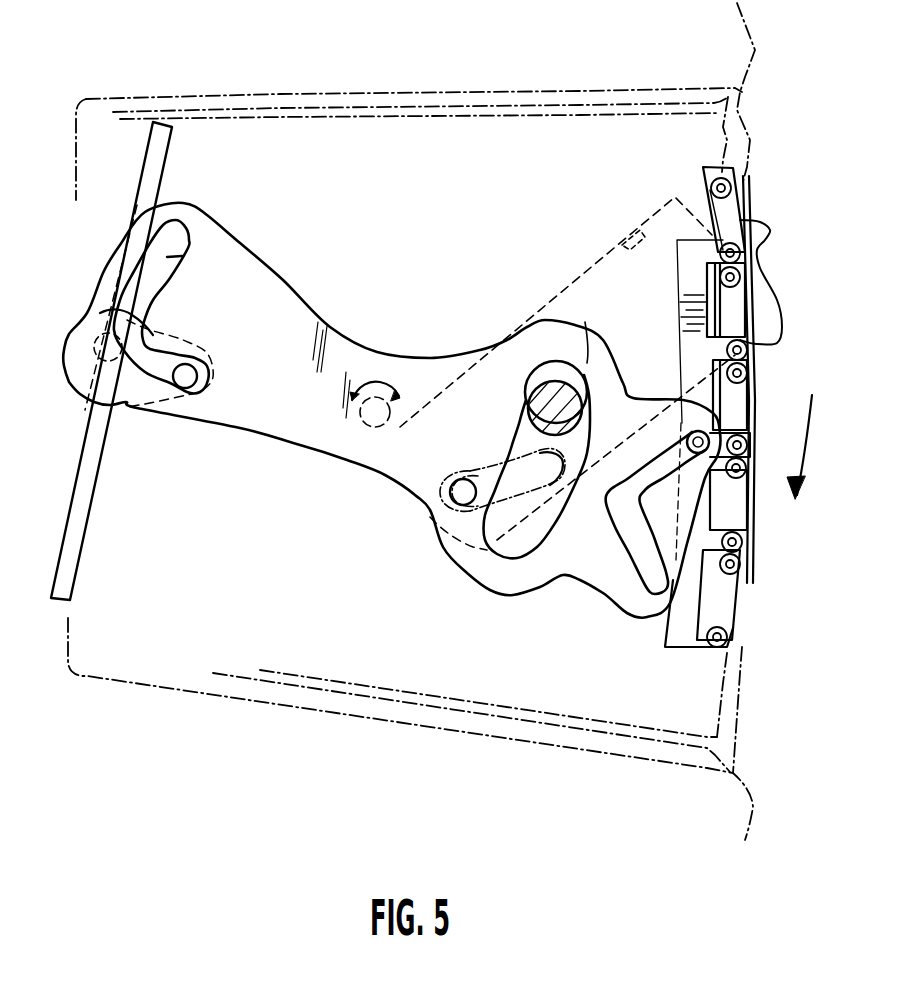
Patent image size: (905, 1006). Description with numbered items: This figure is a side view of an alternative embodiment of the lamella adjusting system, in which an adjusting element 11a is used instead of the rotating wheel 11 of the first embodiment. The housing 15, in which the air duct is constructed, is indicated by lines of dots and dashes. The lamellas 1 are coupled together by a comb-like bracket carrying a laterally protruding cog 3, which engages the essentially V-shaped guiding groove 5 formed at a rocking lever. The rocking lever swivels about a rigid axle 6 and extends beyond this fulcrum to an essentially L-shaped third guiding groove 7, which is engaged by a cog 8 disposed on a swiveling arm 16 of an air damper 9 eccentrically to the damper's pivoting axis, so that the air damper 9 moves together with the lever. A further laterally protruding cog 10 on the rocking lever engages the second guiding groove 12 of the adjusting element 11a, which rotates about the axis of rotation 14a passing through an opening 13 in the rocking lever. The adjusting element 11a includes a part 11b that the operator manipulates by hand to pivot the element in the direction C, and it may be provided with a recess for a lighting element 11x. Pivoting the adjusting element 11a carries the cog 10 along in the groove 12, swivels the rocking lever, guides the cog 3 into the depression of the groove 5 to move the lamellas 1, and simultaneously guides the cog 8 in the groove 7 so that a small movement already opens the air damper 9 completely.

The lamellas 1 is at (735, 220).
The cog 3 is at (750, 510).
The guiding groove 5 is at (642, 543).
The axle 6 is at (373, 425).
The third guiding groove 7 is at (178, 257).
The cog 8 is at (185, 383).
The air damper 9 is at (80, 487).
The cog 10 is at (462, 492).
The rotating wheel 11 is at (478, 205).
The adjusting element 11a is at (557, 293).
The part 11b is at (755, 230).
The lighting element 11x is at (622, 245).
The second guiding groove 12 is at (492, 467).
The opening 13 is at (533, 372).
The axis of rotation 14a is at (583, 330).
The housing 15 is at (253, 96).
The swiveling arm 16 is at (72, 355).
The direction of rotation C is at (815, 440).